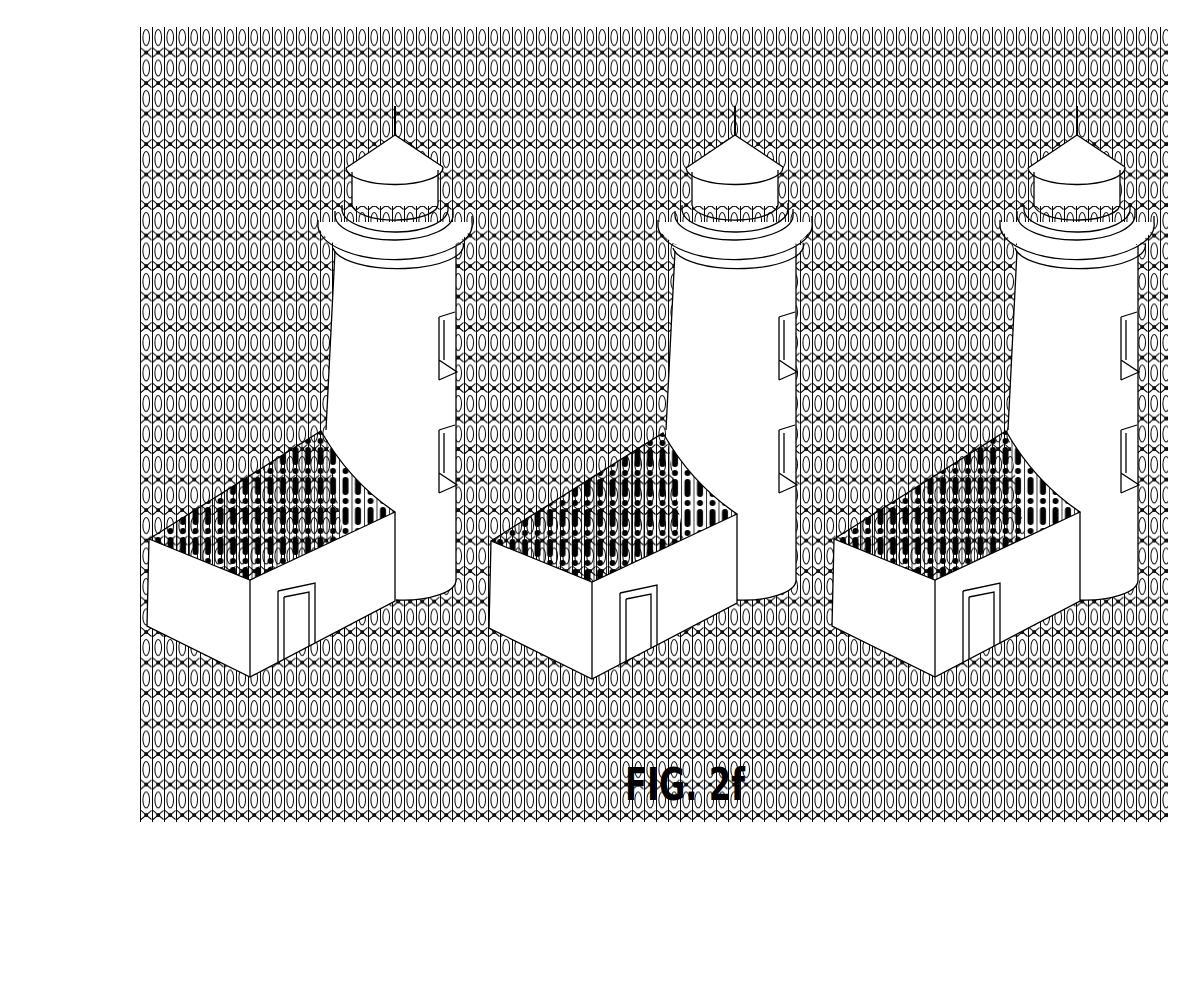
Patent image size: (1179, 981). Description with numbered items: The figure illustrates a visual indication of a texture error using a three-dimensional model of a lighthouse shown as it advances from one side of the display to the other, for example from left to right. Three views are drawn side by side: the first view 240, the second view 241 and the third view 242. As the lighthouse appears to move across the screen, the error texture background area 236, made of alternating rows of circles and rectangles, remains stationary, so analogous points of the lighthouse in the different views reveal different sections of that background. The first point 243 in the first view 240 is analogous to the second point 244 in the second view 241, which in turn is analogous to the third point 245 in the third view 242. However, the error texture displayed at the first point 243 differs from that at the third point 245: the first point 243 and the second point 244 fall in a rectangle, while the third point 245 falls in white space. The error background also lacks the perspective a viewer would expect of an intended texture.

The background area 236 is at (654, 424).
The view 1 240 is at (380, 427).
The view 2 241 is at (720, 423).
The view 3 242 is at (993, 428).
The point 1 243 is at (198, 481).
The point 2 244 is at (537, 480).
The point 3 245 is at (880, 483).